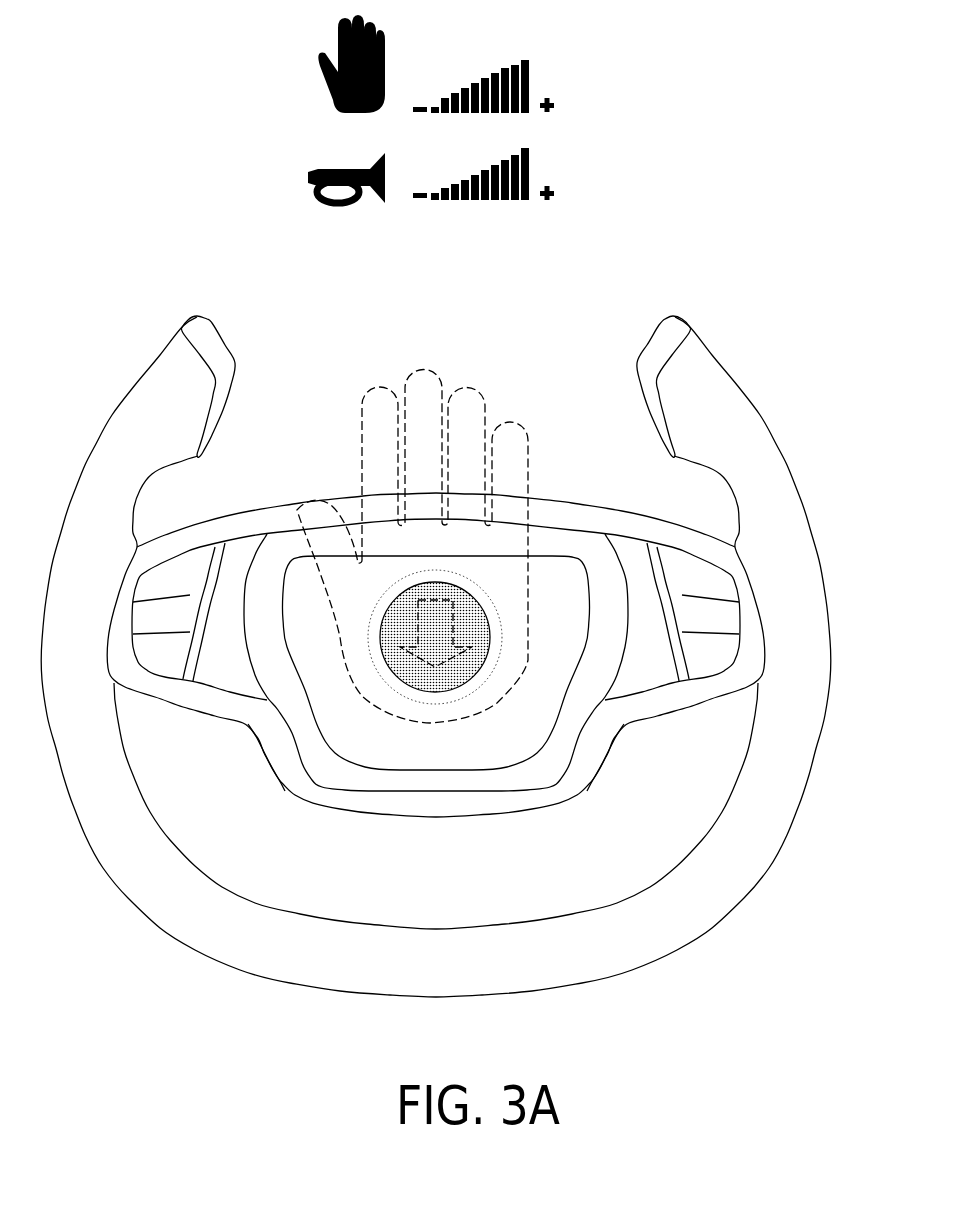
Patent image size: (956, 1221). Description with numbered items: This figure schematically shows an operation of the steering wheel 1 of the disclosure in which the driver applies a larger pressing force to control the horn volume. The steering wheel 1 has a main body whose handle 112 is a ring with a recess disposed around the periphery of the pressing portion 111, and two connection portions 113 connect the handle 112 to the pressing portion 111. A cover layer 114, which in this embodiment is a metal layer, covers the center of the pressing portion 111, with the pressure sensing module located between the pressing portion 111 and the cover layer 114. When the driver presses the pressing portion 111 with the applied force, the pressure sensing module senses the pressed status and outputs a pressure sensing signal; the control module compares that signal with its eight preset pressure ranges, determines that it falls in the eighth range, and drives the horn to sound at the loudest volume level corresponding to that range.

The steering wheel 1 is at (160, 236).
The handle 112 is at (713, 398).
The connection portion 113 is at (178, 572).
The pressing portion 111 is at (381, 750).
The cover layer 114 is at (453, 677).